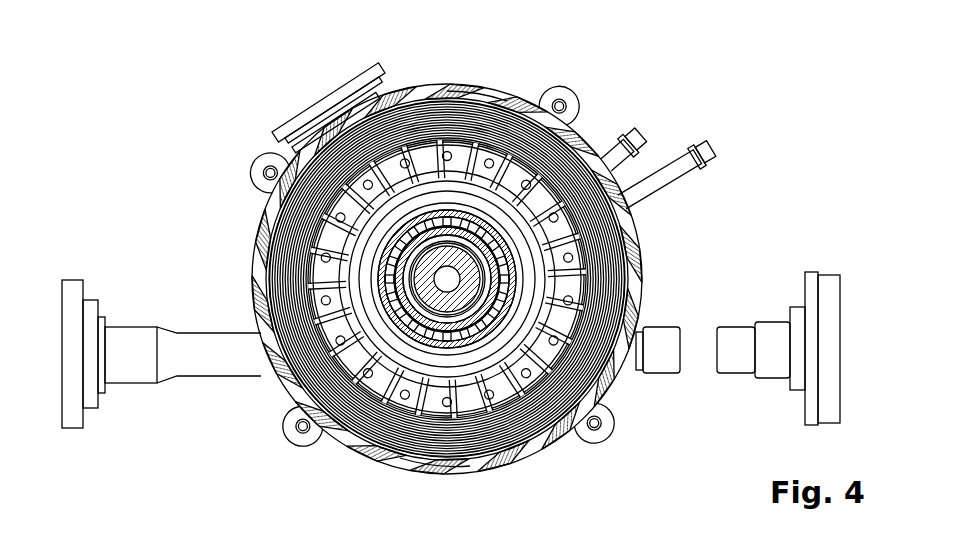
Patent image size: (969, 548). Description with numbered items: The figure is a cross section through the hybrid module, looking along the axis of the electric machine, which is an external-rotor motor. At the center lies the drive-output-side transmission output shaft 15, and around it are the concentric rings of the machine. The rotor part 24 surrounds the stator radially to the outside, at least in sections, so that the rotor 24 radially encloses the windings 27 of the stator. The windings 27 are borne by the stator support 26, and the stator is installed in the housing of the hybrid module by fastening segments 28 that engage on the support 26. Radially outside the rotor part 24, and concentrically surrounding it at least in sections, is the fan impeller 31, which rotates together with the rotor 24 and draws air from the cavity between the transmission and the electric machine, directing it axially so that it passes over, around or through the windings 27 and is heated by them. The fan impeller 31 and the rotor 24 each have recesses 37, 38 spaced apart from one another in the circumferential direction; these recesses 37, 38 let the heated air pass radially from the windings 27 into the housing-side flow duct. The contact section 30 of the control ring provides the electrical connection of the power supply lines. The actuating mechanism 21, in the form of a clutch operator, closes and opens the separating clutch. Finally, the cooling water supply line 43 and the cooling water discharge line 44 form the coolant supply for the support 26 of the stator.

The transmission output shaft 15 is at (197, 340).
The actuating mechanism 21 is at (522, 248).
The rotor part 24 is at (412, 95).
The stator support 26 is at (552, 271).
The windings 27 is at (457, 117).
The fastening segments 28 is at (543, 98).
The contact section 30 is at (313, 113).
The fan impeller 31 is at (490, 88).
The recesses 37 is at (502, 476).
The recesses 38 is at (460, 446).
The cooling water supply line 43 is at (622, 130).
The cooling water discharge line 44 is at (667, 163).